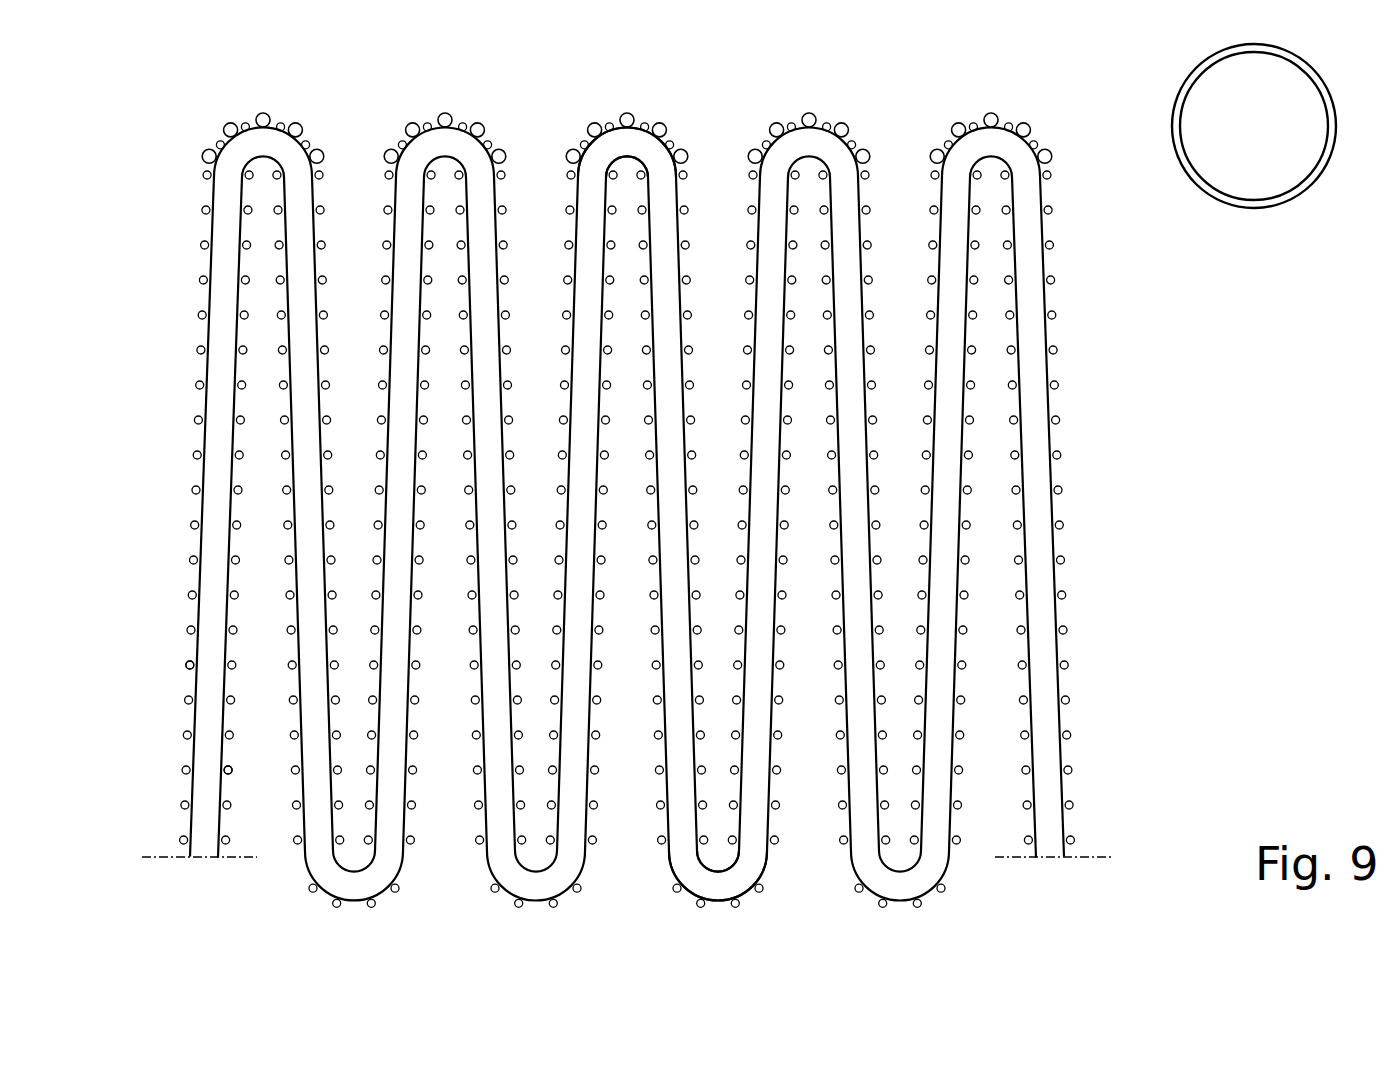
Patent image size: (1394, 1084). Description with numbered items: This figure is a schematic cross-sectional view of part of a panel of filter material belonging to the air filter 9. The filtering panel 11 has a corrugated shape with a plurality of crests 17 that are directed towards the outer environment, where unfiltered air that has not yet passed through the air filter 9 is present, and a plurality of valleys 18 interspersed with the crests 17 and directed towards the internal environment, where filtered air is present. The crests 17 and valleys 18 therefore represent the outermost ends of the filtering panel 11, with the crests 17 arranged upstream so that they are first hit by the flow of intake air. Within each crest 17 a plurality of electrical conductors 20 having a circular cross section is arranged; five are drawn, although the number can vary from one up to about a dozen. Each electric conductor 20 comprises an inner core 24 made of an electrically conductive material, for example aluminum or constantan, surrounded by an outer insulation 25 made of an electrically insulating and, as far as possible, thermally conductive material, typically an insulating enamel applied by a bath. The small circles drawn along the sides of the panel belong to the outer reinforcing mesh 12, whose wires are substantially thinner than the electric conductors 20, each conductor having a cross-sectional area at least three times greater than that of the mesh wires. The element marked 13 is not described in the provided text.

The air filter 9 is at (1228, 664).
The filtering panel 11 is at (222, 507).
The outer reinforcing mesh 12 is at (186, 663).
The spacer element 13 is at (231, 773).
The crests 17 is at (650, 108).
The valleys 18 is at (758, 917).
The electrical conductors 20 is at (261, 111).
The inner core 24 is at (1242, 137).
The outer insulation 25 is at (1298, 190).